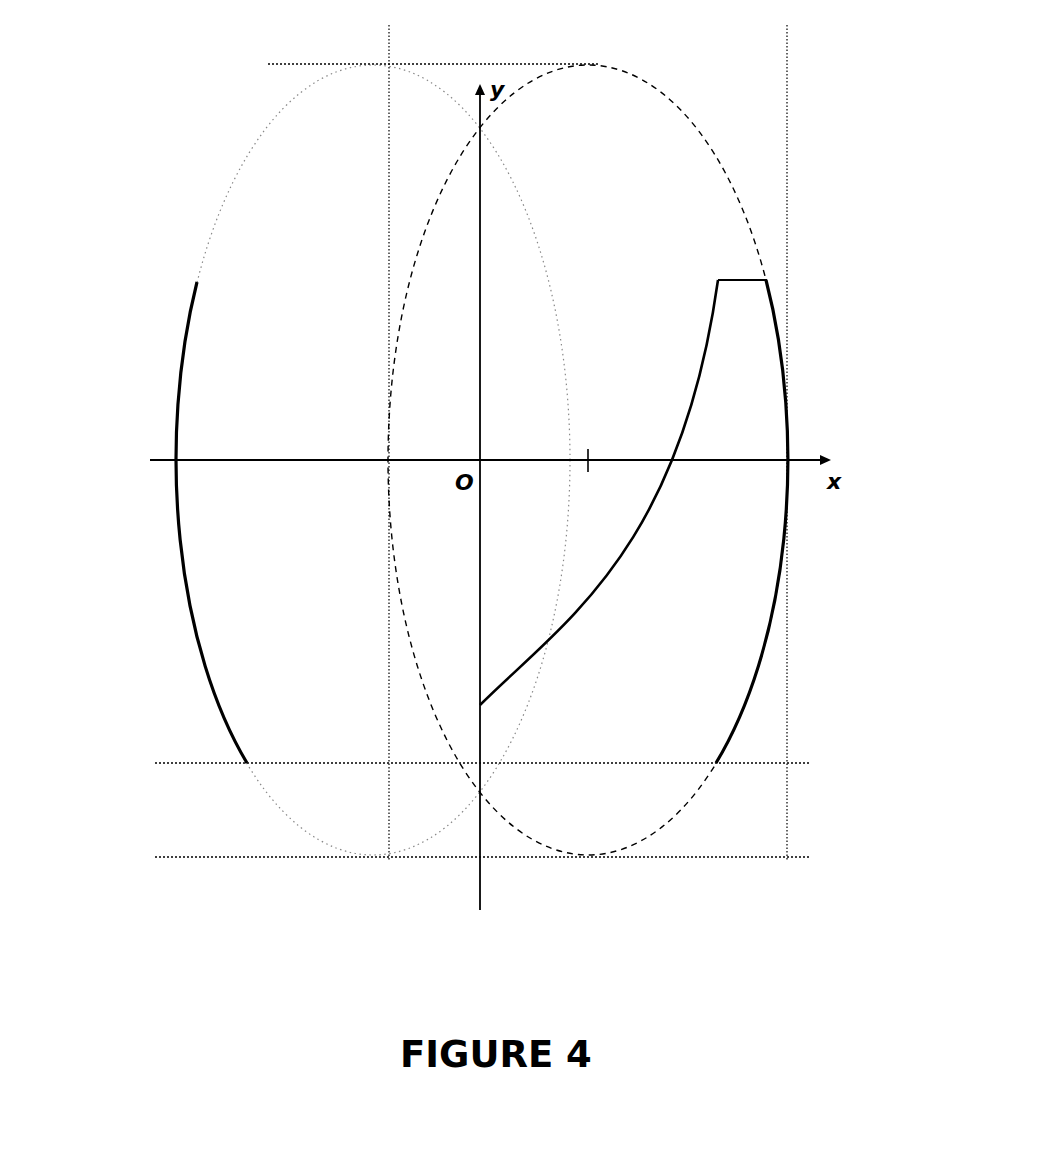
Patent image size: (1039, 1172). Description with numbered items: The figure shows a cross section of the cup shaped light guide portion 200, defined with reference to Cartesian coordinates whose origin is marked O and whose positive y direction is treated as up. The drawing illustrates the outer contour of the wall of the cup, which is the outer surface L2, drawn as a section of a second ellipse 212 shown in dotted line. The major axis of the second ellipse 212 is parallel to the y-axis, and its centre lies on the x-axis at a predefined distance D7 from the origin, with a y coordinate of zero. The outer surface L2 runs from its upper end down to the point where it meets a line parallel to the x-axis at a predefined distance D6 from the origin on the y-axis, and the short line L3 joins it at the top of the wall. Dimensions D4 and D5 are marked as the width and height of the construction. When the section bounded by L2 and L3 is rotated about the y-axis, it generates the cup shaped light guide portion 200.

The lens 200 is at (64, 37).
The second ellipse 212 is at (697, 128).
The width dimension D4 is at (787, 35).
The height dimension D5 is at (312, 857).
The predefined distance D6 is at (698, 462).
The predefined x coordinate D7 is at (618, 446).
The outer surface L2 is at (767, 521).
The line L3 is at (742, 267).